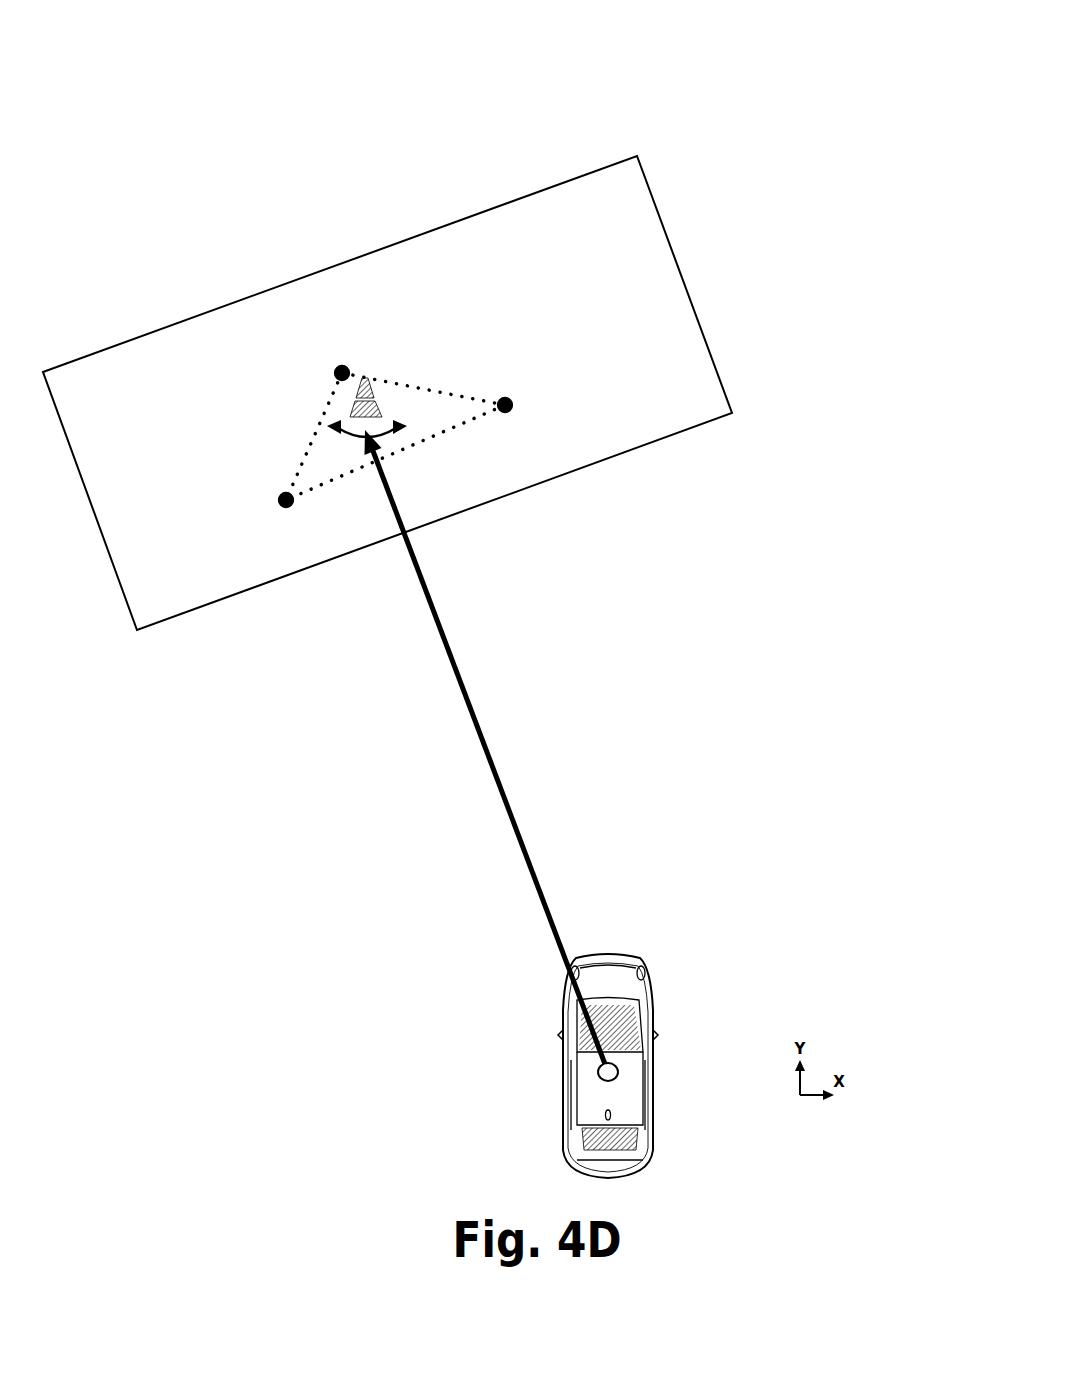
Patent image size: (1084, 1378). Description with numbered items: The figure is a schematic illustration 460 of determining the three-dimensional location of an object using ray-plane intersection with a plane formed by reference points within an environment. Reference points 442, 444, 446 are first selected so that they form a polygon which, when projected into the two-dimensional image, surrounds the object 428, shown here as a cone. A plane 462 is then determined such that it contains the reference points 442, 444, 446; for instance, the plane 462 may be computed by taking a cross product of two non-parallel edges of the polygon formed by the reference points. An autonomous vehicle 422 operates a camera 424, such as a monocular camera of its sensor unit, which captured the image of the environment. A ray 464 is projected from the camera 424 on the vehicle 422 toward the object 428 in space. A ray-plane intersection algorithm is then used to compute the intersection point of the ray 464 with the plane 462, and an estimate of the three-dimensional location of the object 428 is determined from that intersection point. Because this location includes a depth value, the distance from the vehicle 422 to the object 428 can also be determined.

The localization scenario 460 is at (918, 68).
The plane 462 is at (710, 405).
The reference point 442 is at (336, 370).
The reference point 444 is at (293, 497).
The reference point 446 is at (512, 407).
The object 428 is at (373, 392).
The ray 464 is at (477, 725).
The vehicle 422 is at (566, 995).
The camera 424 is at (598, 1088).